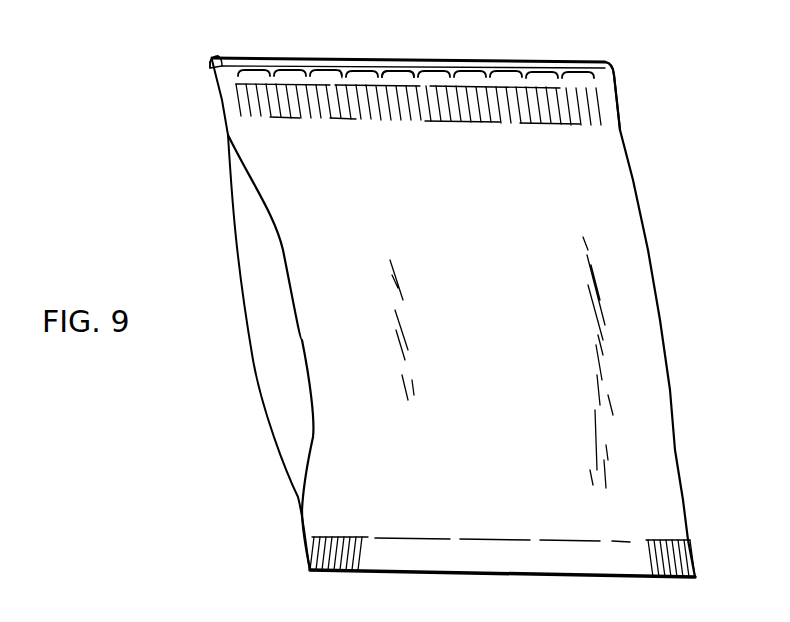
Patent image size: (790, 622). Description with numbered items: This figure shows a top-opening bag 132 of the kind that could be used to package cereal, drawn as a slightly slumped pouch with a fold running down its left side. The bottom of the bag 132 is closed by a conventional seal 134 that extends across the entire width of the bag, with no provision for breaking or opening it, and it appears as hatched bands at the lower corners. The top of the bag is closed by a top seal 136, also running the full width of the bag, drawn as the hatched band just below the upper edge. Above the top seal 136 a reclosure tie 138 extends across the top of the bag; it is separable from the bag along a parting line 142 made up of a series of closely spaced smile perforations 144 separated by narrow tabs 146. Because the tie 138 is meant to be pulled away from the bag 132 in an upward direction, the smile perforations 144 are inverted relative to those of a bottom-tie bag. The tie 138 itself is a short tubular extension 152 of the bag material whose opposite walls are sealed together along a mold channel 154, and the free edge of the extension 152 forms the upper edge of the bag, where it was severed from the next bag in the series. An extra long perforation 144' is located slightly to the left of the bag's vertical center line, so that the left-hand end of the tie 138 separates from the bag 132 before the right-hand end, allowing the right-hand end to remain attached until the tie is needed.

The top-opening bag 132 is at (182, 126).
The conventional seal 134 is at (350, 545).
The top seal 136 is at (320, 112).
The reclosure tie 138 is at (208, 66).
The parting line 142 is at (612, 77).
The smile perforations 144 is at (416, 43).
The extra long perforation 144' is at (403, 43).
The narrow tabs 146 is at (344, 68).
The tubular extension 152 is at (208, 58).
The mold channel 154 is at (220, 56).